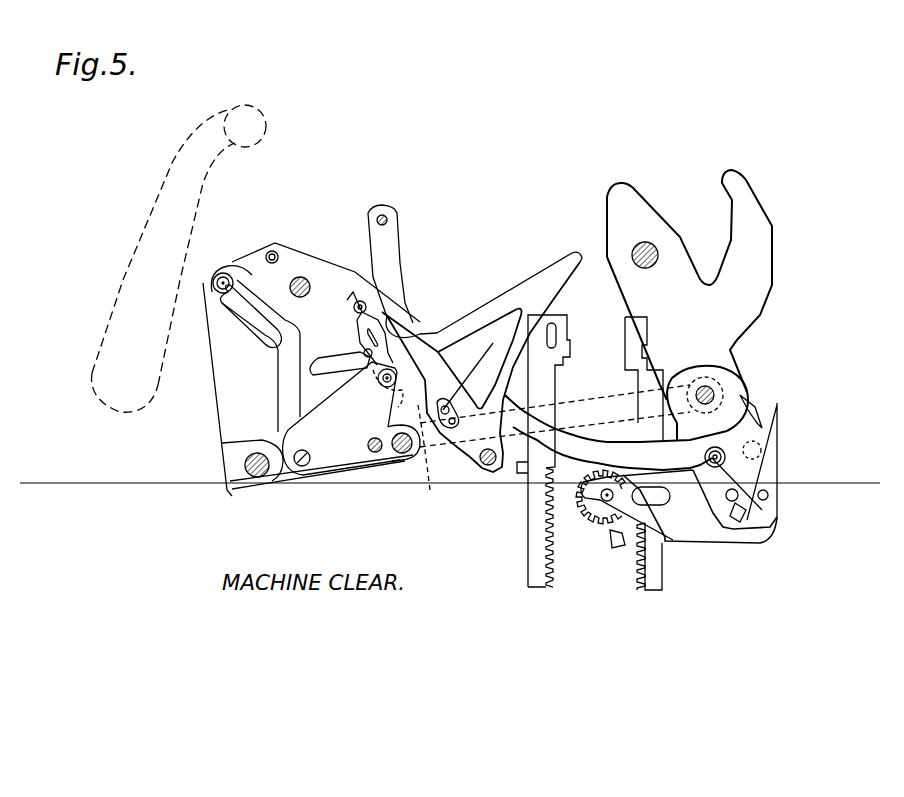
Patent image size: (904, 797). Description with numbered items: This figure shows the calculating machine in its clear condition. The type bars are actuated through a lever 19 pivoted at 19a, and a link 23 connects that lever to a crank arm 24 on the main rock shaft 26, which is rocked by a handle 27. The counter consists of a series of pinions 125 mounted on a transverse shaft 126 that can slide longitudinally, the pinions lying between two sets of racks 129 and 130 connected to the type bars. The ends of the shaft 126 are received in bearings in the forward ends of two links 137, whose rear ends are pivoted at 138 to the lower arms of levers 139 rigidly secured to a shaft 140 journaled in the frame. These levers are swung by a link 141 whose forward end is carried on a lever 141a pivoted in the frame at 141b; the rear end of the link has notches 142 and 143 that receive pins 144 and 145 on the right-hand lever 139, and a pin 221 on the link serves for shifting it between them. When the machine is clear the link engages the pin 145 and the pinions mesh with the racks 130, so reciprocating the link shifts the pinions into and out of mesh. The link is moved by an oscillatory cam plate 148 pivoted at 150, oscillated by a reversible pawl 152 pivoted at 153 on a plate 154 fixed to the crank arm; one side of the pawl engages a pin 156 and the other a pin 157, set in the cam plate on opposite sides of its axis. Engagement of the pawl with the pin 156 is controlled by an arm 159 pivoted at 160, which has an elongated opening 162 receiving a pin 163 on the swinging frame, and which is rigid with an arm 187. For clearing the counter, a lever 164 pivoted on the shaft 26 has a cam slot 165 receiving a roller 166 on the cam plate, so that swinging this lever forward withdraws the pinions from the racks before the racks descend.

The handle 27 is at (150, 211).
The lever 164 is at (222, 398).
The cam plate 148 is at (340, 265).
The roller 166 is at (222, 277).
The cam slot 165 is at (251, 337).
The pin 157 is at (272, 251).
The pivot 150 is at (301, 277).
The main rock shaft 26 is at (257, 479).
The crank arm 24 is at (318, 460).
The plate 154 is at (375, 462).
The pivot 153 is at (428, 490).
The reversible pawl 152 is at (360, 324).
The pin 156 is at (368, 305).
The pivot 141b is at (388, 219).
The lever 141a is at (398, 246).
The arm 159 is at (408, 322).
The arm 187 is at (553, 268).
The pin 163 is at (458, 385).
The elongated opening 162 is at (449, 437).
The pivot 160 is at (486, 467).
The link 141 is at (530, 418).
The link 23 is at (605, 400).
The pivot 19a is at (650, 243).
The lever 19 is at (689, 285).
The pin 144 is at (755, 400).
The notch 142 is at (778, 410).
The shaft 140 is at (757, 451).
The pin 221 is at (716, 467).
The lever 139 is at (772, 467).
The notch 143 is at (668, 488).
The pivot 138 is at (767, 508).
The pin 145 is at (745, 500).
The link 137 is at (680, 548).
The transverse shaft 126 is at (603, 503).
The pinion 125 is at (615, 537).
The rack 129 is at (530, 590).
The rack 130 is at (650, 590).